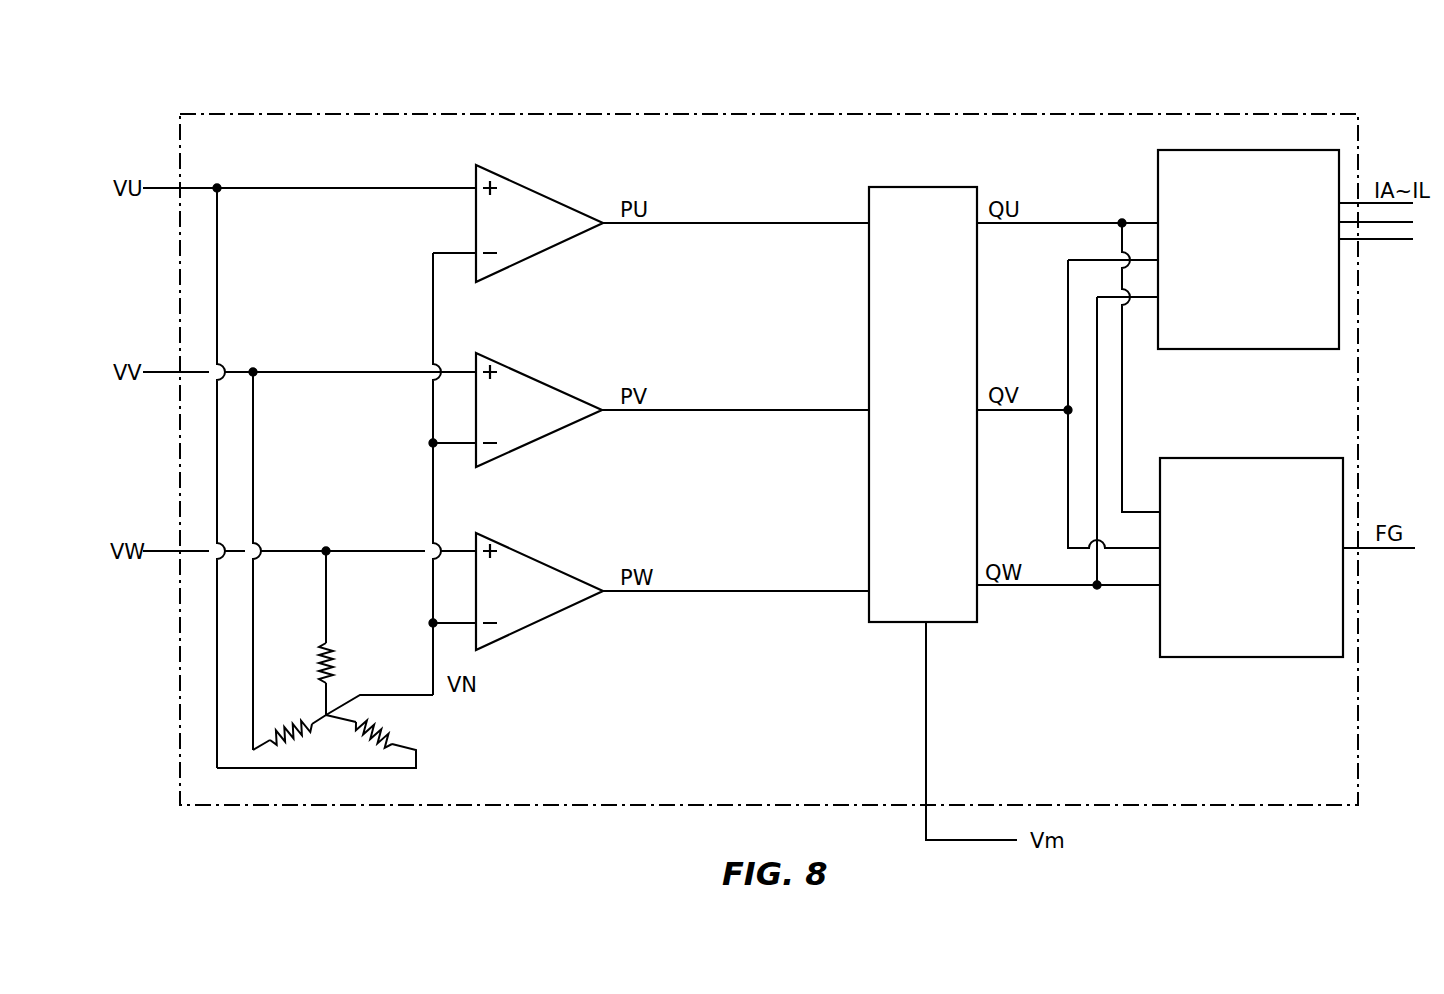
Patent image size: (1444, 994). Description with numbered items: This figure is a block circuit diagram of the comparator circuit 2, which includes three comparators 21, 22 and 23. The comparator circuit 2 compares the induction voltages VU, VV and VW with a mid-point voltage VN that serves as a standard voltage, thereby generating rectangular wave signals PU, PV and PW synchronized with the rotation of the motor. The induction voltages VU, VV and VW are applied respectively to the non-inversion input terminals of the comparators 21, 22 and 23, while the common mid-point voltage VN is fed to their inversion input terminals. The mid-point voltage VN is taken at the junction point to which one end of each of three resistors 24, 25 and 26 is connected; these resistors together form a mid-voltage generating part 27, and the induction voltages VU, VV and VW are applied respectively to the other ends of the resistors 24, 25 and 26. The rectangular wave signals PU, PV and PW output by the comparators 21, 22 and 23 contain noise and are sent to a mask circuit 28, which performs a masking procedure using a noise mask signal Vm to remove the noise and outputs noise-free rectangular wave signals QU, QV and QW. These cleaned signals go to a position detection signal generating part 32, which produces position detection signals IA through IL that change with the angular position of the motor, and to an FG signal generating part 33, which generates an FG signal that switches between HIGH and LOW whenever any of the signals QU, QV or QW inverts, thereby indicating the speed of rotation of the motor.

The comparator circuit 2 is at (1200, 80).
The comparator 21 is at (526, 200).
The comparator 22 is at (530, 390).
The comparator 23 is at (530, 568).
The resistor 24 is at (323, 648).
The resistor 25 is at (306, 730).
The resistor 26 is at (395, 724).
The mid-voltage generating part 27 is at (363, 692).
The mask circuit 28 is at (919, 195).
The position detection signal generating part 32 is at (1209, 167).
The FG signal generating part 33 is at (1207, 477).